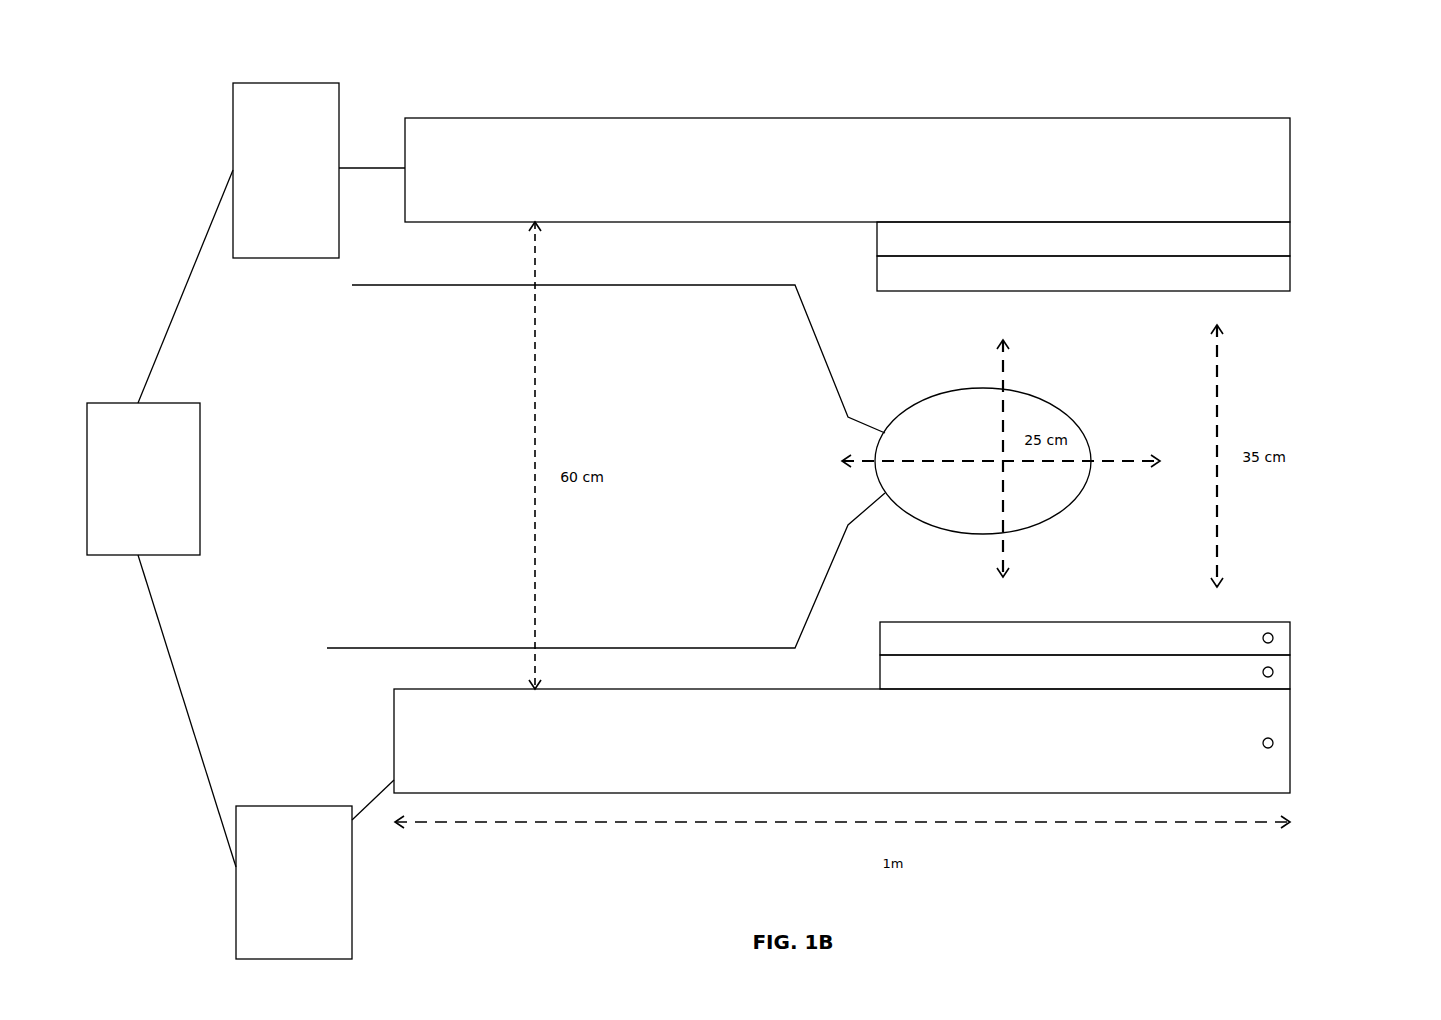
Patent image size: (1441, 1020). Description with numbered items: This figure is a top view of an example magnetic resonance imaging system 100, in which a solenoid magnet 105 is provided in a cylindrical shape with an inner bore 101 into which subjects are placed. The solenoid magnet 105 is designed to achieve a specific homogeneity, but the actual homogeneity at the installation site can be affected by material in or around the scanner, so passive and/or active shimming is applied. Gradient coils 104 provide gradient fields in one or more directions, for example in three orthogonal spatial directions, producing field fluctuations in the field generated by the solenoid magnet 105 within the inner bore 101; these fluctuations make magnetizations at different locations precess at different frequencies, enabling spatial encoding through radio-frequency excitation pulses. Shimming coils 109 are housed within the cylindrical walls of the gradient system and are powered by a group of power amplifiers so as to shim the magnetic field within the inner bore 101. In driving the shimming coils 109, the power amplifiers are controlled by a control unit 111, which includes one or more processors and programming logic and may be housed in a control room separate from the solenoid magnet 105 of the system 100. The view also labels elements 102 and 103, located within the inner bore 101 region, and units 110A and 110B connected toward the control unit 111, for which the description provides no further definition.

The magnetic resonance imaging system 100 is at (762, 501).
The inner bore 101 is at (822, 493).
The head of subject 102 is at (1037, 485).
The body outline of subject 103 is at (445, 527).
The gradient coils 104 is at (1291, 235).
The solenoid magnet 105 is at (1291, 155).
The shimming coils 109 is at (1291, 272).
The first control unit 110A is at (319, 170).
The second control unit 110B is at (315, 869).
The control unit 111 is at (161, 518).